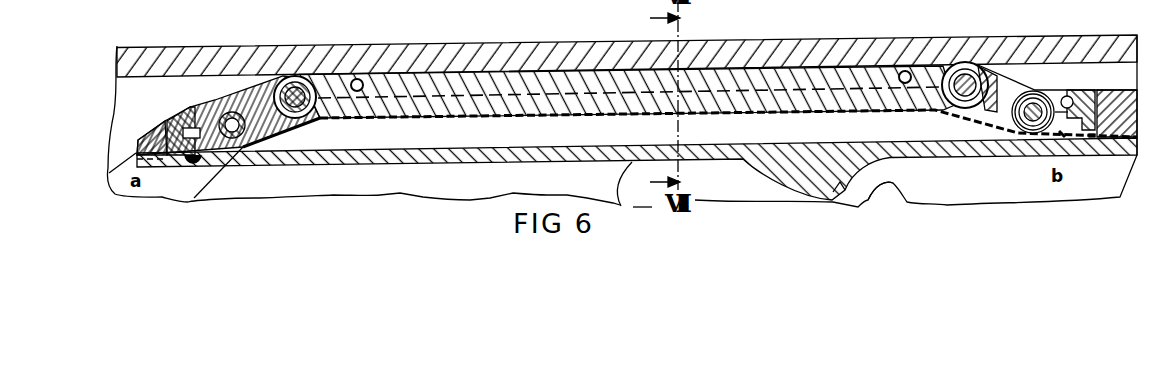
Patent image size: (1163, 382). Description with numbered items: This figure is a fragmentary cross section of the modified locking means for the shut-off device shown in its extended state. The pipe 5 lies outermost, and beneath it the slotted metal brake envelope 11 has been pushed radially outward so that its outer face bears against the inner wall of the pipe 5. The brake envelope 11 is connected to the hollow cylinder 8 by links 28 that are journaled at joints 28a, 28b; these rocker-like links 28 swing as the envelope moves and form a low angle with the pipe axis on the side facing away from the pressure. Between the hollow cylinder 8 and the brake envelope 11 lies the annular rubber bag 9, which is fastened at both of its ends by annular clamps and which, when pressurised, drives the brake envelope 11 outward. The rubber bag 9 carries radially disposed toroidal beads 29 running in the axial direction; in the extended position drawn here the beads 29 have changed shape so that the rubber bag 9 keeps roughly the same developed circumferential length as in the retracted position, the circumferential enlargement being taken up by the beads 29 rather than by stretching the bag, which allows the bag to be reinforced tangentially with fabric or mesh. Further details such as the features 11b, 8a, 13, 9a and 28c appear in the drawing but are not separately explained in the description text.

The pipe 5 is at (581, 44).
The slotted brake envelope 11 is at (513, 80).
The bore 11b is at (360, 79).
The toroidal beads 29 is at (438, 95).
The annular rubber bag 9 is at (434, 123).
The hollow cylinder 8 is at (313, 159).
The lower plate projection 8a is at (896, 153).
The bulge 13 is at (869, 203).
The guide roller 9a is at (191, 160).
The links 28 is at (266, 92).
The joint 28a is at (963, 58).
The joint 28b is at (1045, 104).
The roller sleeve 28c is at (1037, 93).